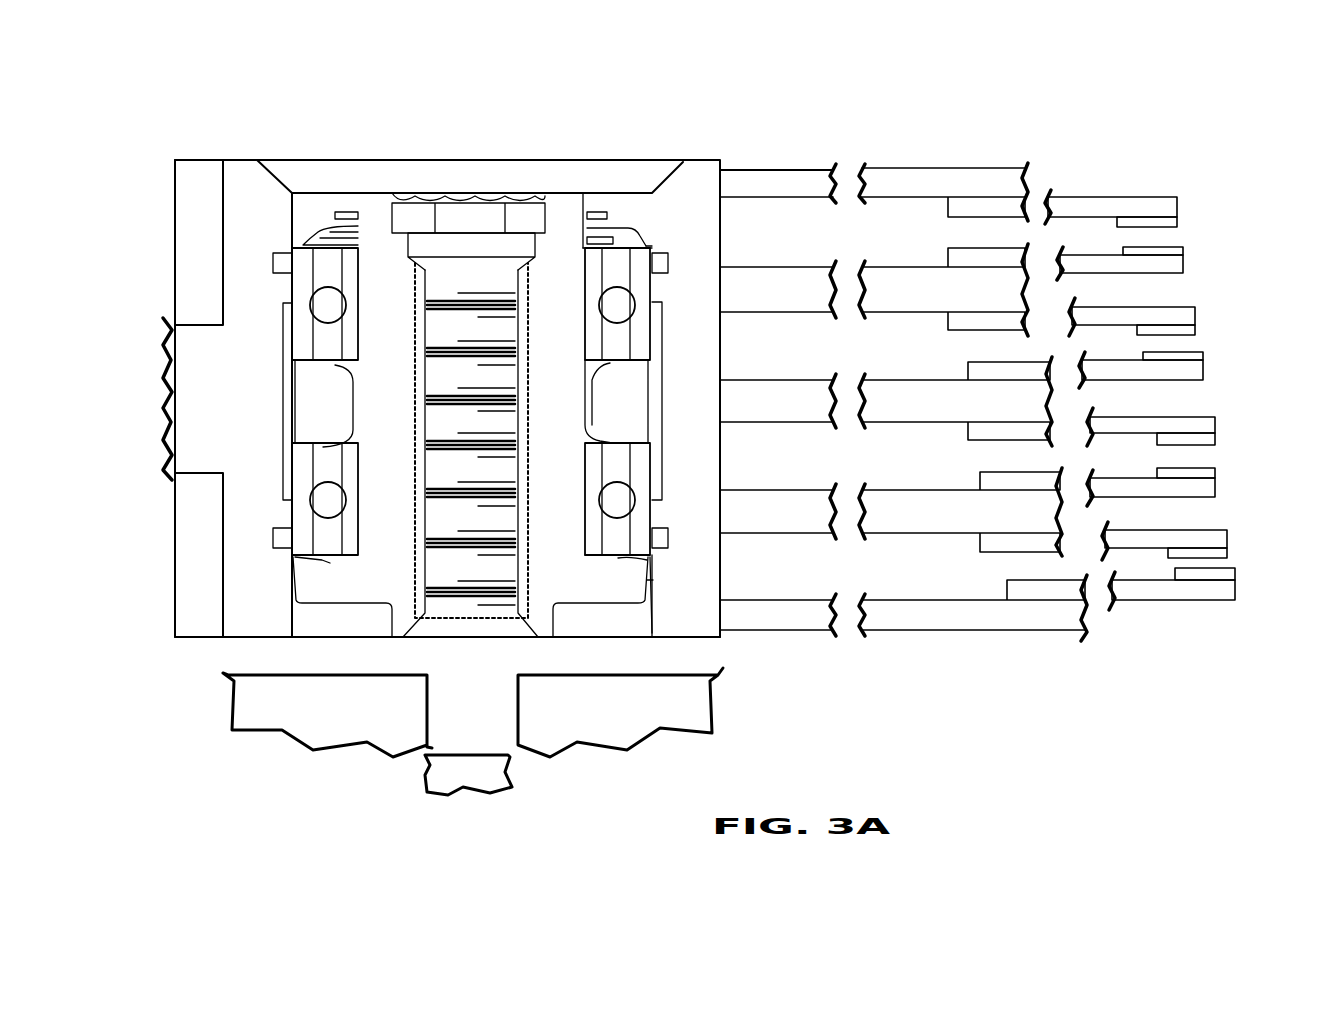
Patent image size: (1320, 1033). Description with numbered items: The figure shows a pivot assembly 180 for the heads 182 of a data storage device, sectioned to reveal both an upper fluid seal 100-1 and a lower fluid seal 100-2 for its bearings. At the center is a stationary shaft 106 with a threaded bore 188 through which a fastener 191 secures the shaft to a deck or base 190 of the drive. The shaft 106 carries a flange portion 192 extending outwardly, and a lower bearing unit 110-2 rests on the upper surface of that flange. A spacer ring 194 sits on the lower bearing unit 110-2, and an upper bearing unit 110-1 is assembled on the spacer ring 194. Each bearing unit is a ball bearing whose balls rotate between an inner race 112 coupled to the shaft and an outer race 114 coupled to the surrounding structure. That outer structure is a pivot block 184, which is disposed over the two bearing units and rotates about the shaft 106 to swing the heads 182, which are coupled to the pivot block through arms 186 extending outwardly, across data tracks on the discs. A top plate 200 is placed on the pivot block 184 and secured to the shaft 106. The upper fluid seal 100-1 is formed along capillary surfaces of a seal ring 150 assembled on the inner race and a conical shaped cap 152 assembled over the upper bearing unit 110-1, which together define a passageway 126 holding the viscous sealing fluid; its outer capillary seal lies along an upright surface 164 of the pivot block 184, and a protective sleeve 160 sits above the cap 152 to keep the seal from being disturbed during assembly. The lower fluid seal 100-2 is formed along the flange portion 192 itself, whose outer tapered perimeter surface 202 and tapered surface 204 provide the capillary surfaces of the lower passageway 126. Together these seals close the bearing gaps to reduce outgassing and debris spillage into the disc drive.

The pivot assembly 180 is at (762, 128).
The top plate 200 is at (425, 172).
The cap 152 is at (582, 228).
The protective sleeve 160 is at (583, 193).
The upper fluid seal 100-1 is at (627, 212).
The lower fluid seal 100-2 is at (657, 560).
The passageway 126 is at (645, 236).
The upper bearing unit 110-1 is at (652, 294).
The lower bearing unit 110-2 is at (650, 480).
The arms 186 is at (225, 404).
The heads 182 is at (1197, 330).
The outer race 114 is at (303, 288).
The inner race 112 is at (348, 343).
The seal ring 150 is at (582, 244).
The shaft 106 is at (570, 338).
The pivot block 184 is at (713, 357).
The threaded bore 188 is at (487, 462).
The spacer ring 194 is at (642, 416).
The tapered surface 204 is at (640, 560).
The flange portion 192 is at (611, 596).
The outer tapered perimeter surface 202 is at (653, 592).
The upright surface 164 is at (647, 637).
The deck or base 190 is at (612, 724).
The fastener 191 is at (483, 779).